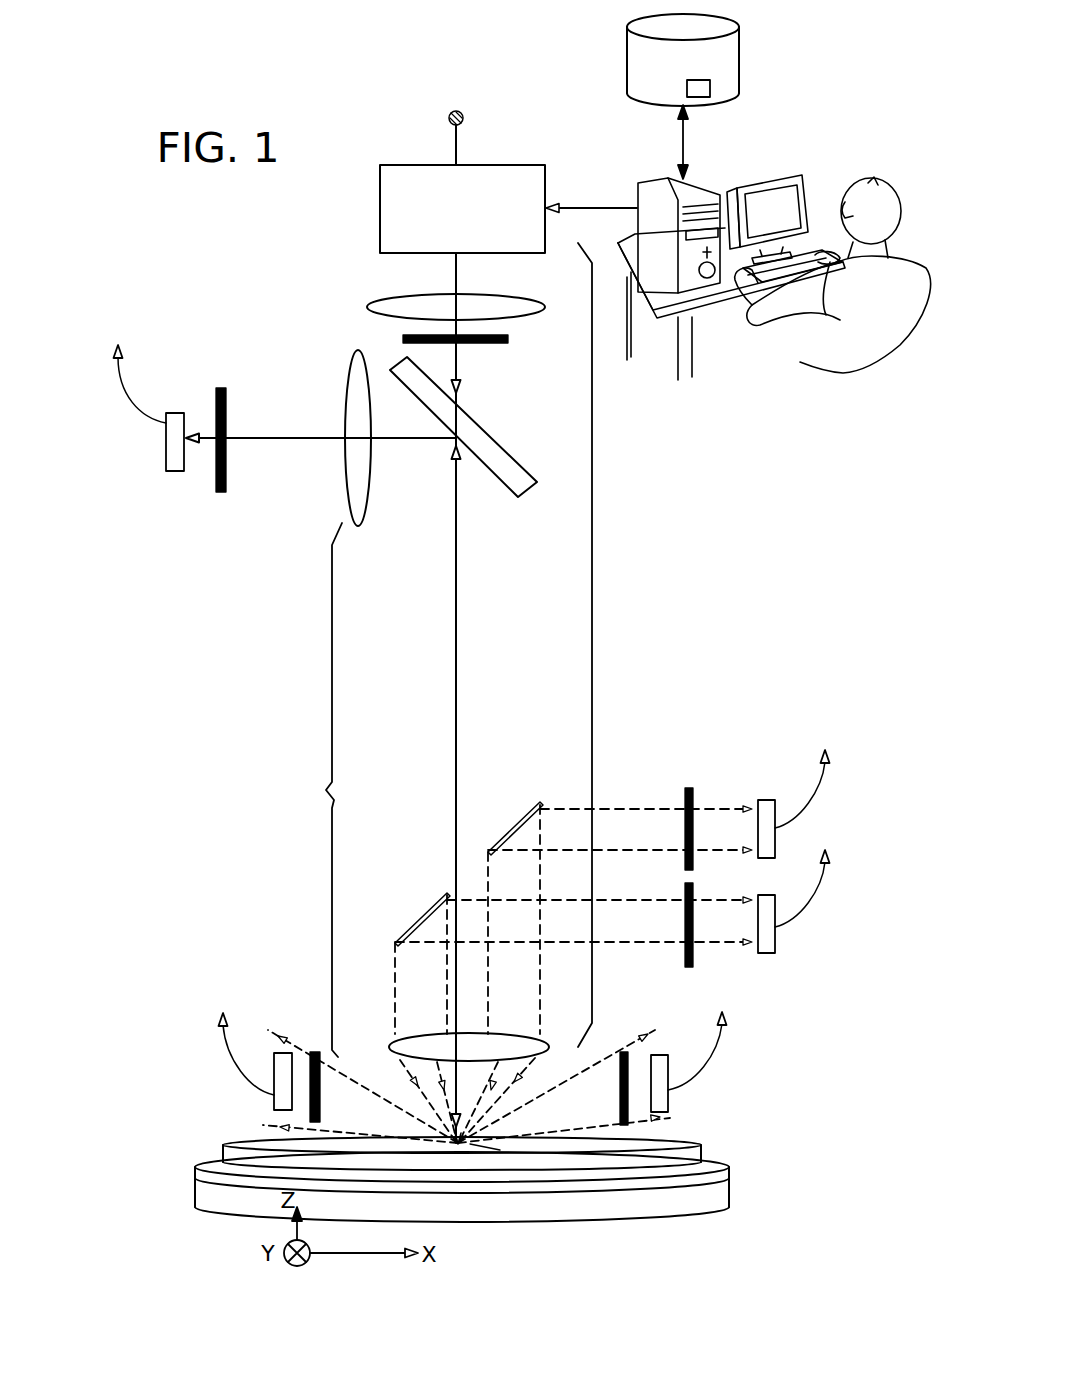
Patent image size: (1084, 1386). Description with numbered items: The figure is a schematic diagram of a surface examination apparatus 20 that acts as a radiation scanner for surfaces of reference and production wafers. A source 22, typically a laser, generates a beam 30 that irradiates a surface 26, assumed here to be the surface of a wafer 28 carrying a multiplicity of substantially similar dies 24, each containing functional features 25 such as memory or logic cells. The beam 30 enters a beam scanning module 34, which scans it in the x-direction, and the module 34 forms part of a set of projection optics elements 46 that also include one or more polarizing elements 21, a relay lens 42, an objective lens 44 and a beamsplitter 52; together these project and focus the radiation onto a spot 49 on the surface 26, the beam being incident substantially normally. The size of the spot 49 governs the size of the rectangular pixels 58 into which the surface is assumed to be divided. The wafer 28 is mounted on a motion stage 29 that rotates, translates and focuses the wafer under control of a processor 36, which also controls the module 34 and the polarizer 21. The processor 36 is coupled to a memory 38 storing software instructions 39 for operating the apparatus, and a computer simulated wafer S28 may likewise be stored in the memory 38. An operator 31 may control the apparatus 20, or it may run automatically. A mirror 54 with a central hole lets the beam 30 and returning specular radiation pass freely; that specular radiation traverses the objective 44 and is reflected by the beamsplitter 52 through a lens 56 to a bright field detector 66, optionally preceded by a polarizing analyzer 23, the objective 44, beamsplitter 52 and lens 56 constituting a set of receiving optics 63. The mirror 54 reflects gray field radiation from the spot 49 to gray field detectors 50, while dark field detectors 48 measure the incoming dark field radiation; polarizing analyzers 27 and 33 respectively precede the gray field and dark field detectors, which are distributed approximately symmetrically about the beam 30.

The surface examination apparatus 20 is at (193, 843).
The polarizing elements 21 is at (485, 343).
The source 22 is at (449, 114).
The polarizing analyzer 23 is at (226, 400).
The dies 24 is at (174, 1118).
The functional features 25 is at (172, 1068).
The surface 26 is at (224, 1138).
The polarizing analyzers 27 is at (686, 794).
The wafer 28 is at (613, 1168).
The motion stage 29 is at (710, 1202).
The beam 30 is at (456, 272).
The operator 31 is at (892, 208).
The polarizing analyzers 33 is at (322, 1054).
The beam scanning module 34 is at (380, 208).
The processor 36 is at (648, 183).
The memory 38 is at (628, 68).
The software instructions 39 is at (710, 88).
The relay lens 42 is at (540, 312).
The objective lens 44 is at (549, 1046).
The projection optics elements 46 is at (592, 646).
The dark field detectors 48 is at (274, 1100).
The spot 49 is at (468, 1148).
The gray field detectors 50 is at (764, 803).
The beamsplitter 52 is at (529, 470).
The mirror 54 is at (434, 918).
The lens 56 is at (366, 516).
The pixels 58 is at (490, 1150).
The receiving optics 63 is at (314, 790).
The bright field detector 66 is at (166, 468).
The simulated wafer S28 is at (745, 119).